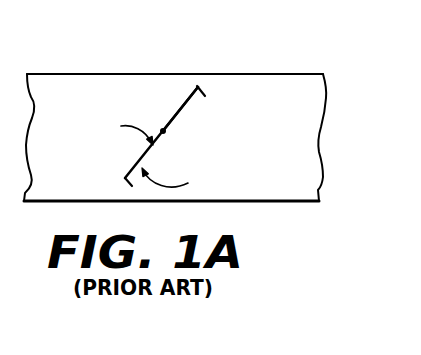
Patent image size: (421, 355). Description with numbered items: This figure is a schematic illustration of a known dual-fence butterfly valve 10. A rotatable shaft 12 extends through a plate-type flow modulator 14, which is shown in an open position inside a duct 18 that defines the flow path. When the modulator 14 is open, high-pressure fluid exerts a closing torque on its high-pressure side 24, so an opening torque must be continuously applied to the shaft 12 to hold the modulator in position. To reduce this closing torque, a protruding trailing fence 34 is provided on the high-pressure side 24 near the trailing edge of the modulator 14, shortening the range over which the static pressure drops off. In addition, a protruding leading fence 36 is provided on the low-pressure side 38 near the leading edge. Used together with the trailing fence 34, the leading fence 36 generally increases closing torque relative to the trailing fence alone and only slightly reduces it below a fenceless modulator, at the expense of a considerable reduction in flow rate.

The butterfly valve 10 is at (289, 165).
The duct 18 is at (136, 40).
The rotatable shaft 12 is at (166, 134).
The plate-type flow modulator 14 is at (194, 107).
The trailing fence 34 is at (203, 91).
The leading fence 36 is at (123, 180).
The high-pressure side 24 is at (121, 130).
The low-pressure side 38 is at (178, 180).